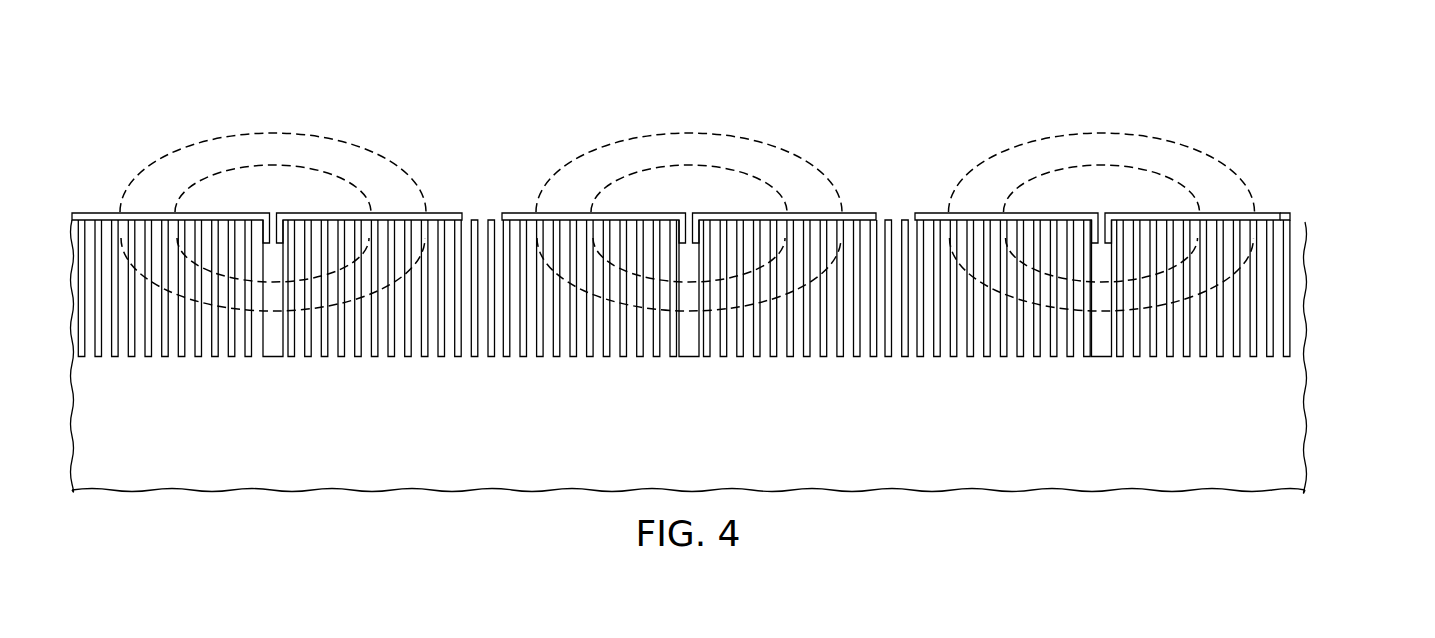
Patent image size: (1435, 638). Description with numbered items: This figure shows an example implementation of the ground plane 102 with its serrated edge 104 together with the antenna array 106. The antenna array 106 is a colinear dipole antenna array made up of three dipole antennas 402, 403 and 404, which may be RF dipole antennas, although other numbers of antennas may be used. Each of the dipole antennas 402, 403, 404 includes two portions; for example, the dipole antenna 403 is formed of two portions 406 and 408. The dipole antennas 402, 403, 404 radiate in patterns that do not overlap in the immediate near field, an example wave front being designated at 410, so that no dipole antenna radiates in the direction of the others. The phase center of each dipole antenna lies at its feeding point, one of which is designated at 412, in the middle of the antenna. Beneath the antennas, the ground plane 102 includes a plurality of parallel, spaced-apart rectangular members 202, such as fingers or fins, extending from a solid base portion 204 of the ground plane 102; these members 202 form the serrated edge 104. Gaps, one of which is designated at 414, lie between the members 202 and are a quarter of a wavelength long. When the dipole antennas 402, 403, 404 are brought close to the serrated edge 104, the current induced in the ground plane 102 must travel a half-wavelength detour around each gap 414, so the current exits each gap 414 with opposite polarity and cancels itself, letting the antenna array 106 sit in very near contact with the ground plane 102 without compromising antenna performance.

The ground plane 102 is at (1307, 417).
The serrated edge 104 is at (1346, 331).
The antenna array 106 is at (837, 170).
The rectangular members 202 is at (1304, 253).
The base portion 204 is at (710, 437).
The dipole antenna 402 is at (433, 212).
The dipole antenna 403 is at (513, 212).
The dipole antenna 404 is at (928, 212).
The portion 406 is at (525, 212).
The portion 408 is at (858, 212).
The wave front 410 is at (1110, 133).
The feeding point 412 is at (273, 198).
The gap 414 is at (1301, 206).